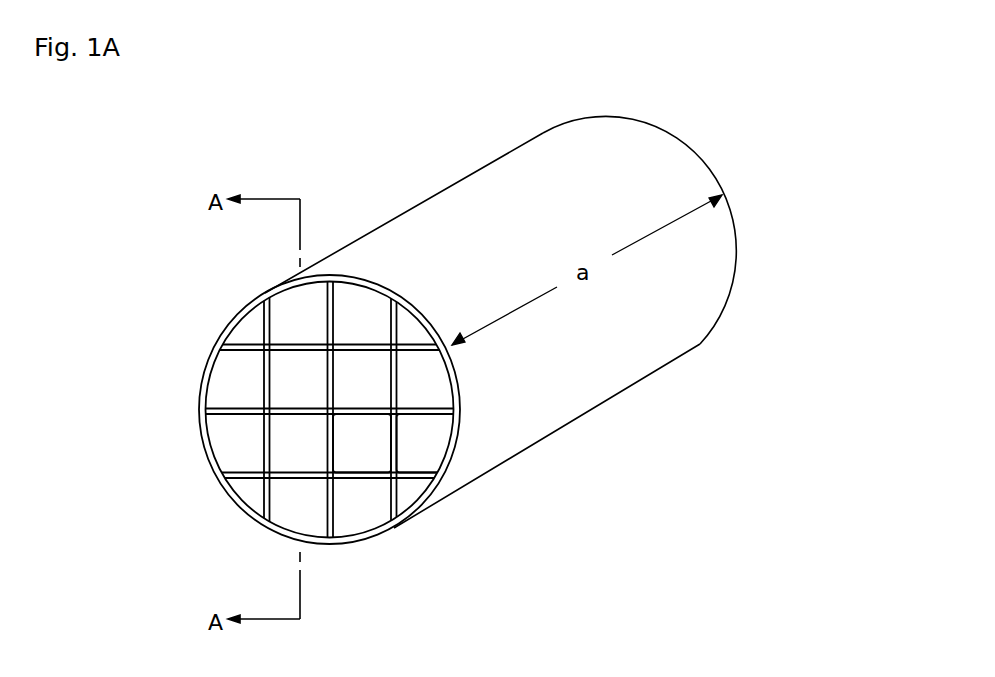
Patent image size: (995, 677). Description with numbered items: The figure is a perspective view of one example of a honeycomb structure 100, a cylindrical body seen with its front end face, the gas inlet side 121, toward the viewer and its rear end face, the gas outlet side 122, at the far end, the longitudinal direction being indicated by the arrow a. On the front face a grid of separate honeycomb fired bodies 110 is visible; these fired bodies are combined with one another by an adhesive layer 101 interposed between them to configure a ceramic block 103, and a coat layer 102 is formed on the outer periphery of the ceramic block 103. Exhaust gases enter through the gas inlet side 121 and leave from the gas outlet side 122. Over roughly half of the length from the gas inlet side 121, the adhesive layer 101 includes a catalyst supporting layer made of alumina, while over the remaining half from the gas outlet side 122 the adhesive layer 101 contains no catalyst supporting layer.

The honeycomb structure 100 is at (442, 183).
The adhesive layer 101 is at (267, 455).
The coat layer 102 is at (455, 372).
The ceramic block 103 is at (213, 366).
The honeycomb fired body 110 is at (342, 450).
The gas inlet side 121 is at (427, 460).
The gas outlet side 122 is at (737, 228).